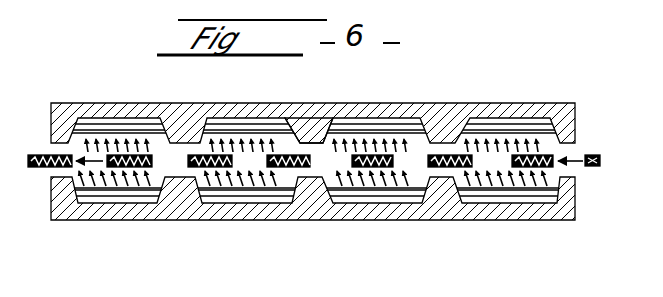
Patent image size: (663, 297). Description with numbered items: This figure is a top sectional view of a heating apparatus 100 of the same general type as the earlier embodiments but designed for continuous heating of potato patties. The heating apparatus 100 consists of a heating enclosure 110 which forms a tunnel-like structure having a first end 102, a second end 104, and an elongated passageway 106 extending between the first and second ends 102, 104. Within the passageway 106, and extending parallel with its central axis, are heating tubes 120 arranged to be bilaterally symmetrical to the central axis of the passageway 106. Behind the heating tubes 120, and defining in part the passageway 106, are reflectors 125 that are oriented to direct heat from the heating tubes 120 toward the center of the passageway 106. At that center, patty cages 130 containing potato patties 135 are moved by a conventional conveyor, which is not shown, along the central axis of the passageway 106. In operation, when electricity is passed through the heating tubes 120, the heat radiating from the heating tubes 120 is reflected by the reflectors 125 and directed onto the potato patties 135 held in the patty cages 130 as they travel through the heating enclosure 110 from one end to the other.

The heating apparatus 100 is at (280, 234).
The first end 102 is at (575, 195).
The second end 104 is at (52, 130).
The elongated passageway 106 is at (320, 158).
The heating enclosure 110 is at (240, 220).
The heating tubes 120 is at (470, 104).
The reflectors 125 is at (482, 203).
The patty cages 130 is at (134, 167).
The potato patties 135 is at (281, 156).